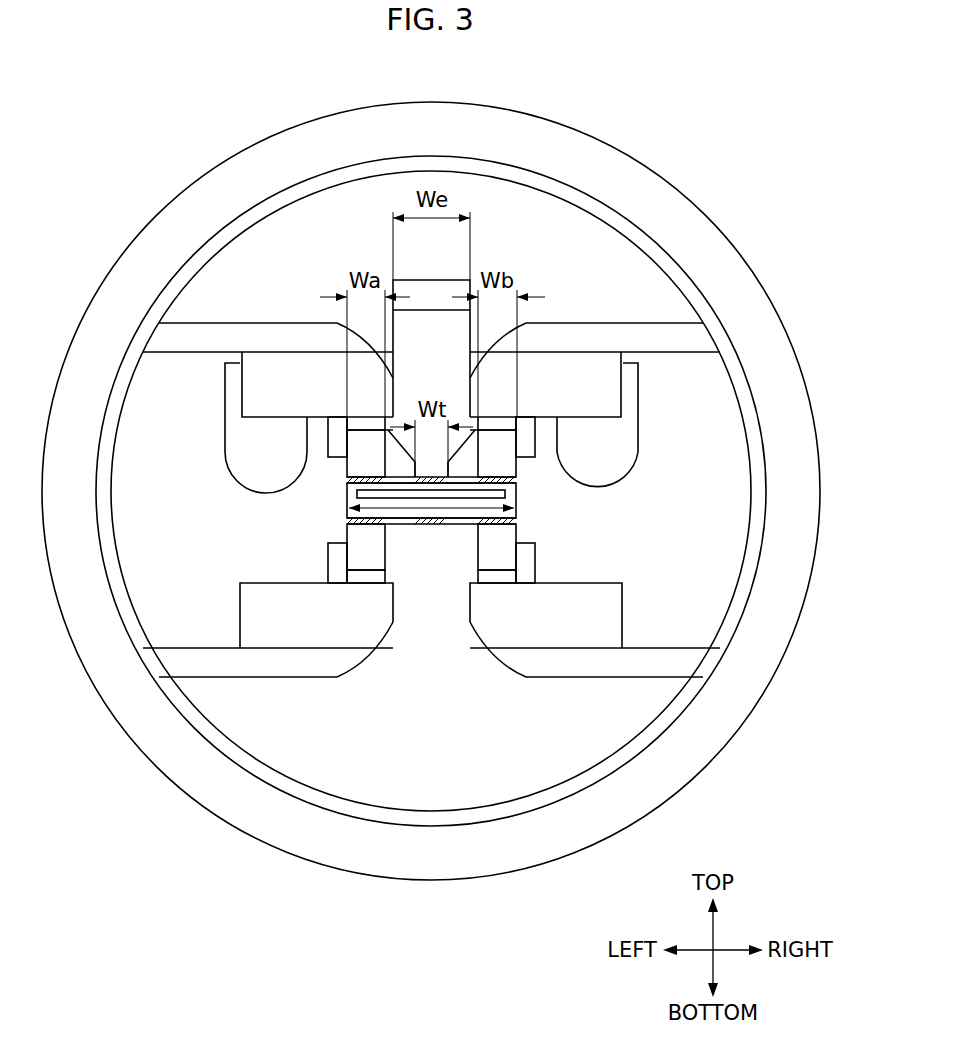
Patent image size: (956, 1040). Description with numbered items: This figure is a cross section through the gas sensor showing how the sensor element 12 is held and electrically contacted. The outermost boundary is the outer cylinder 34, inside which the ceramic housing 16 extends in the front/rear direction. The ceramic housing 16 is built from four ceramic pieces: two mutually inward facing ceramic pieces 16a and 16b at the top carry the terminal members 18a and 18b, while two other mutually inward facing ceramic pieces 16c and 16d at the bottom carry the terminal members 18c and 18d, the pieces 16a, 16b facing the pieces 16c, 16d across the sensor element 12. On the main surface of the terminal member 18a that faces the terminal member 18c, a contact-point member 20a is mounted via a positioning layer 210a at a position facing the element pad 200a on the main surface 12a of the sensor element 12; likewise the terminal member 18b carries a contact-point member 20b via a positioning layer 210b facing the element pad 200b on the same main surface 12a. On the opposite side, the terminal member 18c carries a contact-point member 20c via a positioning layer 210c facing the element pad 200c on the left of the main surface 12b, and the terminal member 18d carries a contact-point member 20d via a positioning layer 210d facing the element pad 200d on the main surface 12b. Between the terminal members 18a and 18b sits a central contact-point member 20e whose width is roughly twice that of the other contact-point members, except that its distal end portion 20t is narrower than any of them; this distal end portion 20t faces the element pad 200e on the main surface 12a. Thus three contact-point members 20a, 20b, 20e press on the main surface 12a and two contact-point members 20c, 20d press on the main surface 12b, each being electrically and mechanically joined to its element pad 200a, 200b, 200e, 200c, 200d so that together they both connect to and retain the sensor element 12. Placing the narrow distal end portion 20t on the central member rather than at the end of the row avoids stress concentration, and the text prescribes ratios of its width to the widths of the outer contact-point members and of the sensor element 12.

The outer cylinder 34 is at (558, 187).
The ceramic housing 16 is at (686, 314).
The ceramic piece 16a is at (231, 342).
The ceramic piece 16b is at (633, 342).
The ceramic piece 16c is at (303, 662).
The ceramic piece 16d is at (557, 662).
The terminal member 18a is at (291, 378).
The terminal member 18b is at (574, 385).
The terminal member 18c is at (263, 630).
The terminal member 18d is at (600, 607).
The contact-point member 20a is at (350, 440).
The contact-point member 20b is at (512, 445).
The contact-point member 20c is at (372, 575).
The contact-point member 20d is at (492, 575).
The contact-point member 20e is at (424, 310).
The distal end portion 20t is at (430, 467).
The sensor element 12 is at (512, 488).
The main surface 12a is at (350, 462).
The main surface 12b is at (348, 568).
The element pad 200a is at (372, 482).
The element pad 200b is at (520, 477).
The element pad 200c is at (347, 521).
The element pad 200d is at (507, 522).
The element pad 200e is at (452, 526).
The positioning layer 210a is at (330, 445).
The positioning layer 210b is at (535, 448).
The positioning layer 210c is at (330, 563).
The positioning layer 210d is at (535, 563).